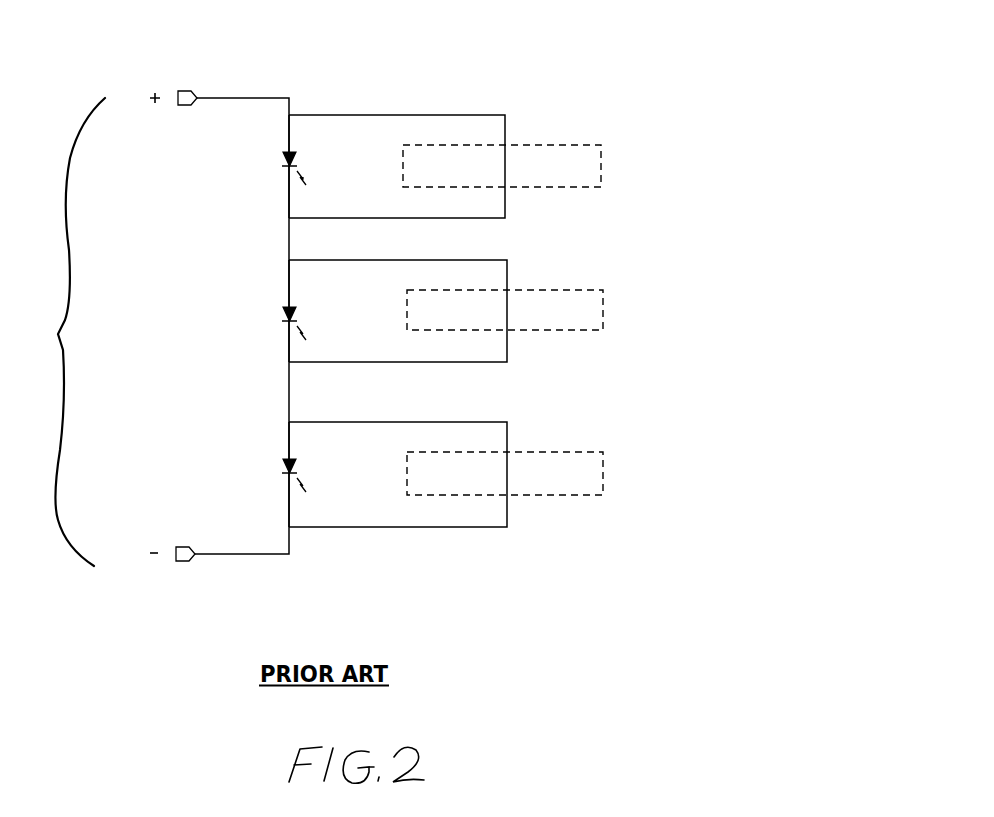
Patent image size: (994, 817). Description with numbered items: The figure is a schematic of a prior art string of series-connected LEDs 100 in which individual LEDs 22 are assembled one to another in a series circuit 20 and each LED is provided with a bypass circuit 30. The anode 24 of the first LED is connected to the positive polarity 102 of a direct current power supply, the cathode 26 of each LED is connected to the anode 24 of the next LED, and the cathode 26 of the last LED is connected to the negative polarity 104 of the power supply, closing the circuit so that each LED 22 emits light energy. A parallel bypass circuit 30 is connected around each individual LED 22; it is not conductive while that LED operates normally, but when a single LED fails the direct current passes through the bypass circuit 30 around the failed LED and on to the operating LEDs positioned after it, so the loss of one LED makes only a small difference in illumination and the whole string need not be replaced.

The string of series-connected LEDs 100 is at (55, 332).
The positive polarity 102 is at (183, 96).
The negative polarity 104 is at (183, 565).
The series circuit 20 is at (257, 93).
The LED 22 is at (273, 160).
The anode 24 is at (284, 146).
The cathode 26 is at (282, 171).
The bypass circuit 30 is at (550, 143).